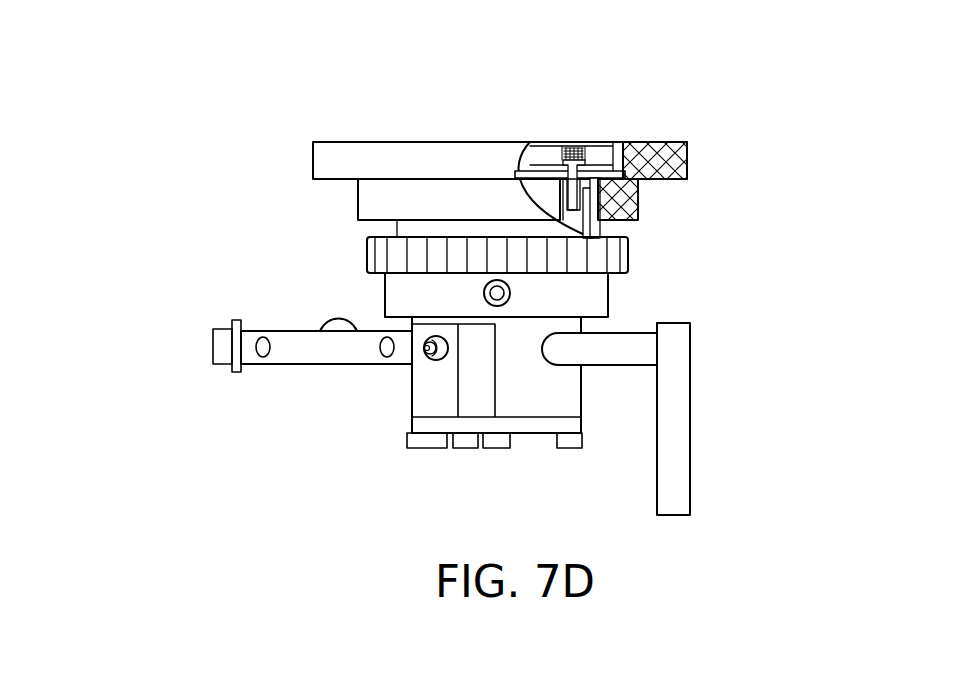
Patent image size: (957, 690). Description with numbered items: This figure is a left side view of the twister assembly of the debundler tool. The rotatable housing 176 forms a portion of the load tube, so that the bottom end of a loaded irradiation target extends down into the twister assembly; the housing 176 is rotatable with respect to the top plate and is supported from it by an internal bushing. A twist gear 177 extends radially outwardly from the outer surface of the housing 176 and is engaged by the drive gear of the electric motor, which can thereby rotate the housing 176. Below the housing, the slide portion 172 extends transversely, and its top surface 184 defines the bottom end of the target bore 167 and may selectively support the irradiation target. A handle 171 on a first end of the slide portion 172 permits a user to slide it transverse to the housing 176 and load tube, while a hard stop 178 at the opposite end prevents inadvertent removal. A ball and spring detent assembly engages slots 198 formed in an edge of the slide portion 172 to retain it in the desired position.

The target bore 167 is at (493, 128).
The twist gear 177 is at (367, 257).
The housing 176 is at (597, 300).
The slide portion 172 is at (297, 321).
The hard stop 178 is at (228, 345).
The slots 198 is at (263, 352).
The top surface 184 is at (323, 331).
The handle 171 is at (705, 457).